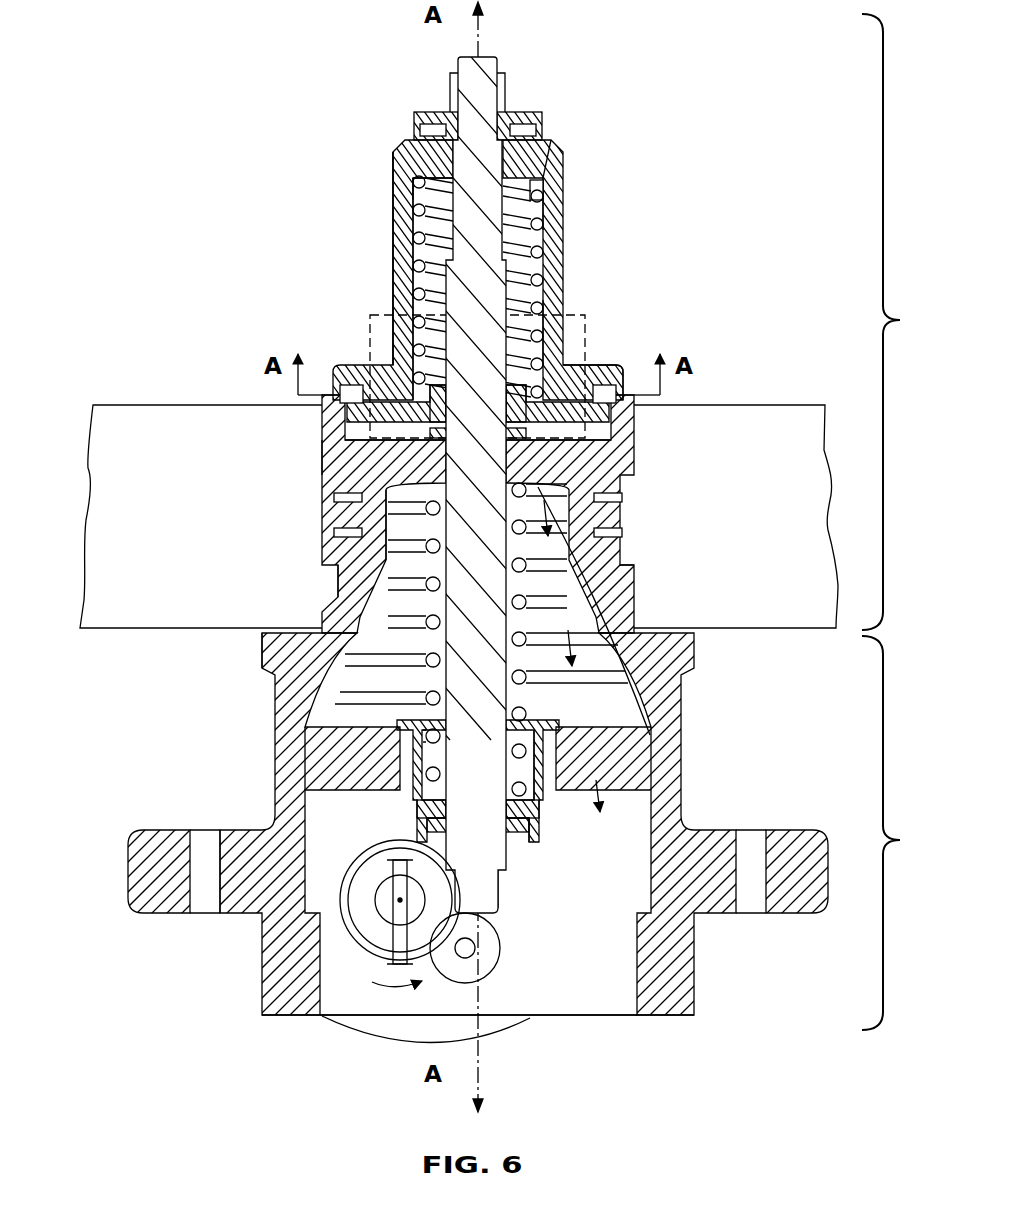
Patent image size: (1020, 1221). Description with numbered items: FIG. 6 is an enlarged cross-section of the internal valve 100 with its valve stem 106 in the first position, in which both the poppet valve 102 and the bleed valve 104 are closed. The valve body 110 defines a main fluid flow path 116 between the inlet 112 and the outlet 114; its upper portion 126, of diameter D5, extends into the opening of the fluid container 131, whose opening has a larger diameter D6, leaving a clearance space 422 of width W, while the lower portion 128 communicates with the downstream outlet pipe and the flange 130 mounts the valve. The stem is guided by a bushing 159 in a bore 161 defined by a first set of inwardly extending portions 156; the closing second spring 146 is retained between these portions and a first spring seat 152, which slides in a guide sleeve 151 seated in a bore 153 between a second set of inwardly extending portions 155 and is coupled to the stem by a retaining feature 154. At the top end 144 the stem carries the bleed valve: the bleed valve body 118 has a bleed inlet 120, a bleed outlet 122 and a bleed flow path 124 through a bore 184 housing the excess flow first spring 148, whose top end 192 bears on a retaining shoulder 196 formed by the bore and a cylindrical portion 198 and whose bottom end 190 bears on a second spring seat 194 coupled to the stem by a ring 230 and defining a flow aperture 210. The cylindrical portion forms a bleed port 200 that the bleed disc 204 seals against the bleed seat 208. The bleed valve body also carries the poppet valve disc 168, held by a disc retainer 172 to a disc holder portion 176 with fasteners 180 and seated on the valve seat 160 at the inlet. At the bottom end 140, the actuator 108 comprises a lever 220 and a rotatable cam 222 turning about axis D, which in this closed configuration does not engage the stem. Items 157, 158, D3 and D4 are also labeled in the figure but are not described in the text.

The internal valve 100 is at (283, 103).
The poppet valve 102 is at (232, 392).
The bleed valve 104 is at (557, 100).
The valve stem 106 is at (462, 584).
The actuator 108 is at (345, 982).
The valve body 110 is at (275, 640).
The inlet 112 is at (638, 382).
The outlet 114 is at (556, 1020).
The main fluid flow path 116 is at (550, 500).
The bleed valve body 118 is at (398, 272).
The bleed inlet 120 is at (572, 127).
The bleed outlet 122 is at (428, 448).
The bleed flow path 124 is at (432, 250).
The upper portion 126 is at (510, 514).
The lower portion 128 is at (510, 571).
The flange 130 is at (140, 905).
The fluid container 131 is at (788, 432).
The bottom end 140 is at (500, 880).
The top end 144 is at (444, 94).
The second spring 146 is at (340, 595).
The first spring 148 is at (412, 250).
The guide sleeve 151 is at (408, 740).
The first spring seat 152 is at (418, 808).
The bore 153 is at (530, 805).
The retaining feature 154 is at (530, 842).
The second set of opposed inwardly extending portions 155 is at (320, 760).
The first set of inwardly extending portions 156 is at (350, 505).
The seal 157 is at (540, 826).
The housing step 158 is at (636, 566).
The bushing 159 is at (350, 470).
The valve seat 160 is at (640, 412).
The bore 161 is at (380, 512).
The valve disc 168 is at (333, 412).
The disc retainer 172 is at (600, 365).
The disc holder portion 176 is at (628, 368).
The fasteners 180 is at (600, 436).
The bore 184 is at (545, 260).
The bottom end 190 is at (556, 336).
The top end 192 is at (540, 195).
The second spring seat 194 is at (562, 436).
The retaining shoulder 196 is at (553, 178).
The cylindrical portion 198 is at (413, 180).
The bleed port 200 is at (412, 127).
The bleed disc 204 is at (505, 110).
The bleed seat 208 is at (547, 134).
The flow aperture 210 is at (378, 335).
The lever 220 is at (230, 914).
The rotatable cam 222 is at (487, 962).
The ring 230 is at (570, 470).
The clearance space 422 is at (330, 455).
The axis D is at (398, 898).
The diameter D3 is at (718, 667).
The diameter D4 is at (862, 881).
The diameter D5 is at (730, 440).
The diameter D6 is at (693, 612).
The width W is at (352, 551).